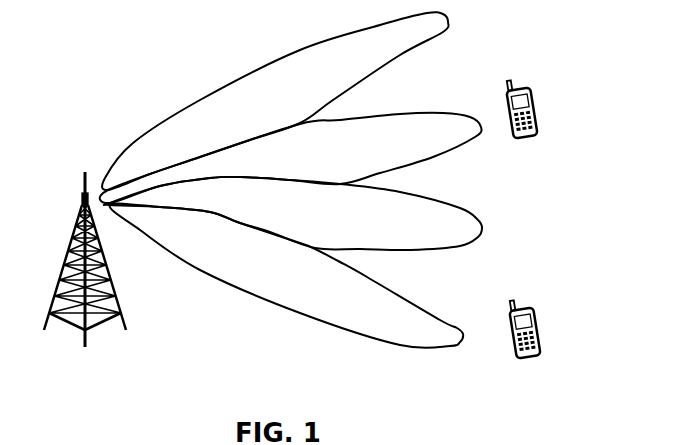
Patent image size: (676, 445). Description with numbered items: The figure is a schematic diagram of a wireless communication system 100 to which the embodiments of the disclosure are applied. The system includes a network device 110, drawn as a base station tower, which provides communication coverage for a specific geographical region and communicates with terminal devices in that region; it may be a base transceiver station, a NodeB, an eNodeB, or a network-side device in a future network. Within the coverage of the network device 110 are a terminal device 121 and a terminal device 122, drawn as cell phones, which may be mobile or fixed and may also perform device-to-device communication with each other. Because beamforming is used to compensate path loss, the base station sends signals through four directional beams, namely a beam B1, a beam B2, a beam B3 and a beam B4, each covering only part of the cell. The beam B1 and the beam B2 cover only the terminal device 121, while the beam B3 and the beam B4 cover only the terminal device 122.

The wireless communication system 100 is at (83, 37).
The network device 110 is at (68, 228).
The terminal device 121 is at (503, 100).
The terminal device 122 is at (503, 323).
The beam B1 is at (275, 101).
The beam B2 is at (291, 158).
The beam B3 is at (293, 213).
The beam B4 is at (286, 276).